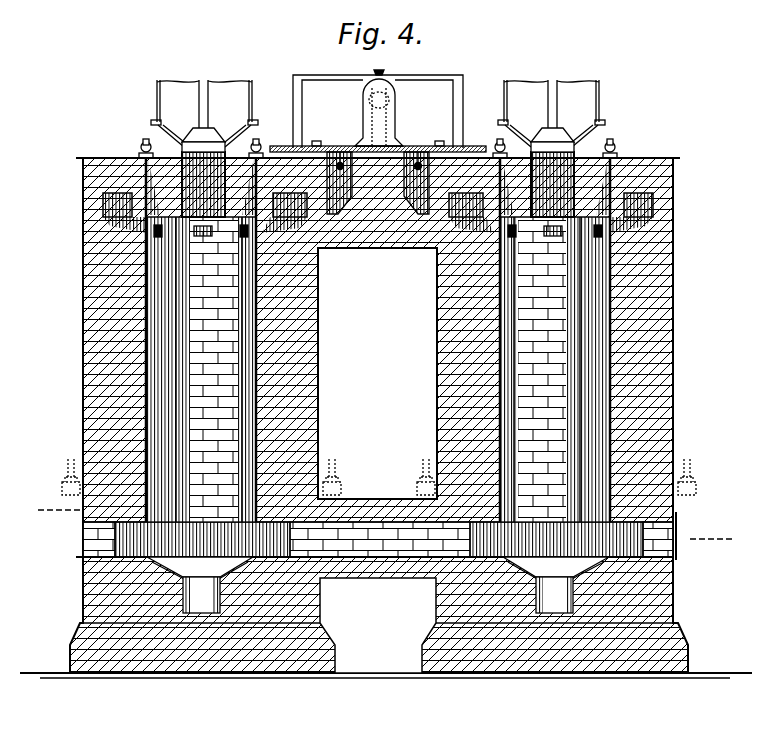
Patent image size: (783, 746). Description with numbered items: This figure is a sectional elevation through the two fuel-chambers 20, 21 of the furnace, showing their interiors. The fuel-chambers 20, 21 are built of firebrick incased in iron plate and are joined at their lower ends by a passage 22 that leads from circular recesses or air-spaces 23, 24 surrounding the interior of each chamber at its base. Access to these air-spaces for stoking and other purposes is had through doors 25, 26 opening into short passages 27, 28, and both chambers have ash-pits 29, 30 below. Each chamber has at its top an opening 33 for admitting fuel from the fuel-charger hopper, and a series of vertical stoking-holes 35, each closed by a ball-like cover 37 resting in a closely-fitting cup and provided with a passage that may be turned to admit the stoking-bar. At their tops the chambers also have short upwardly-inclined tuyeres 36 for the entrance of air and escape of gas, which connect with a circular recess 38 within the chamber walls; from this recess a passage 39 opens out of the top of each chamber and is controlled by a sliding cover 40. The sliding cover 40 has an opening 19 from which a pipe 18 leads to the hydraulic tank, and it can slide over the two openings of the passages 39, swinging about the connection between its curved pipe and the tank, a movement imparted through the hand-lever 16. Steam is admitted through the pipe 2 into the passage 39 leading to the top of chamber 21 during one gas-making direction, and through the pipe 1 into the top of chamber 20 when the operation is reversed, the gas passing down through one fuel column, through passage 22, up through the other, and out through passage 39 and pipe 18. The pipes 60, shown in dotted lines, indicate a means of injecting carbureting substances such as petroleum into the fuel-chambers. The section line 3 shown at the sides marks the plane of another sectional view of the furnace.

The pipe 1 is at (418, 149).
The pipe 2 is at (341, 149).
The section line 3 is at (388, 525).
The hand-lever 16 is at (384, 73).
The pipe 18 is at (392, 93).
The opening 19 is at (379, 141).
The fuel-chamber 20 is at (555, 340).
The fuel-chamber 21 is at (201, 340).
The passage 22 is at (380, 539).
The circular recess or air-space 23 is at (556, 539).
The circular recess or air-space 24 is at (202, 539).
The door 25 is at (685, 539).
The door 26 is at (364, 559).
The short passage 27 is at (658, 539).
The short passage 28 is at (99, 539).
The ash-pit 29 is at (556, 585).
The ash-pit 30 is at (200, 585).
The opening 33 is at (378, 184).
The stoking-holes 35 is at (146, 168).
The tuyeres 36 is at (212, 233).
The ball-like cover 37 is at (147, 140).
The circular recess 38 is at (102, 208).
The passage 39 is at (379, 183).
The sliding cover 40 is at (378, 140).
The pipes 60 is at (62, 489).